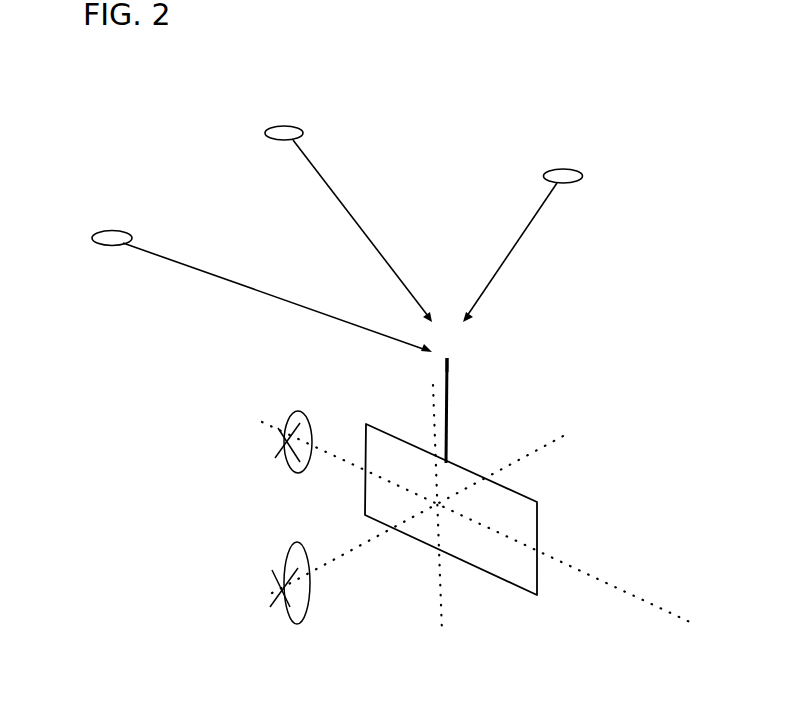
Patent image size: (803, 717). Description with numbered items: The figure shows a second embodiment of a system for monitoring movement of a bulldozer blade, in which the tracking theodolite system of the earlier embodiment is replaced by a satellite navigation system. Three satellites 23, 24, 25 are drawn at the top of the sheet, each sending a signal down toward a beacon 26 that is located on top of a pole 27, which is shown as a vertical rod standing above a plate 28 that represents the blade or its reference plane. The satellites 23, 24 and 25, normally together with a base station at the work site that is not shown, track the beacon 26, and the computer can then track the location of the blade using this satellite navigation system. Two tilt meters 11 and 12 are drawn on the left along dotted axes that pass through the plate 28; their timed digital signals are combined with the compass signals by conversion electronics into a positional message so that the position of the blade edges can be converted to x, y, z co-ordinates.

The tilt meter 11 is at (283, 442).
The tilt meter 12 is at (283, 588).
The satellite 23 is at (110, 231).
The satellite 24 is at (272, 127).
The satellite 25 is at (562, 169).
The beacon 26 is at (466, 349).
The pole 27 is at (447, 419).
The reference plate 28 is at (537, 530).